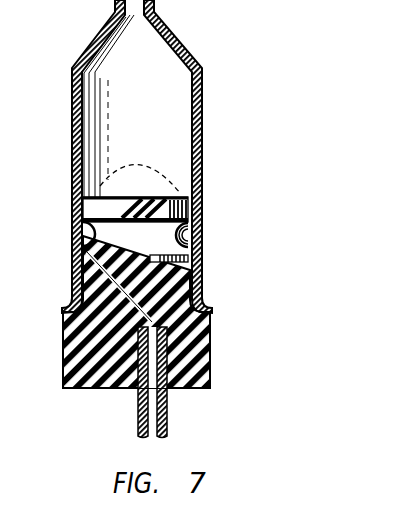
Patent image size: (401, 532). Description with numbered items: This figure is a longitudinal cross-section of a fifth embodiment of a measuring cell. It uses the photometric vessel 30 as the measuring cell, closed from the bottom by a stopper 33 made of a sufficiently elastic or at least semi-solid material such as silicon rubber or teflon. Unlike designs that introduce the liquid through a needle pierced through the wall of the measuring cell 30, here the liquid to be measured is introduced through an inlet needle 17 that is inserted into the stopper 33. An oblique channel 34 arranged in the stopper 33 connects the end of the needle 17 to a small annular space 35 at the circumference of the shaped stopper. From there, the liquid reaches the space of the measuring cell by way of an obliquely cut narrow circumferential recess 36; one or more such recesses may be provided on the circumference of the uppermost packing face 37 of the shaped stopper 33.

The photometric vessel 30 is at (182, 50).
The uppermost packing face 37 is at (93, 208).
The oblique cut narrow circumferential recess 36 is at (157, 200).
The small annular space 35 is at (186, 232).
The oblique channel 34 is at (84, 250).
The stopper 33 is at (210, 316).
The inlet needle 17 is at (167, 416).